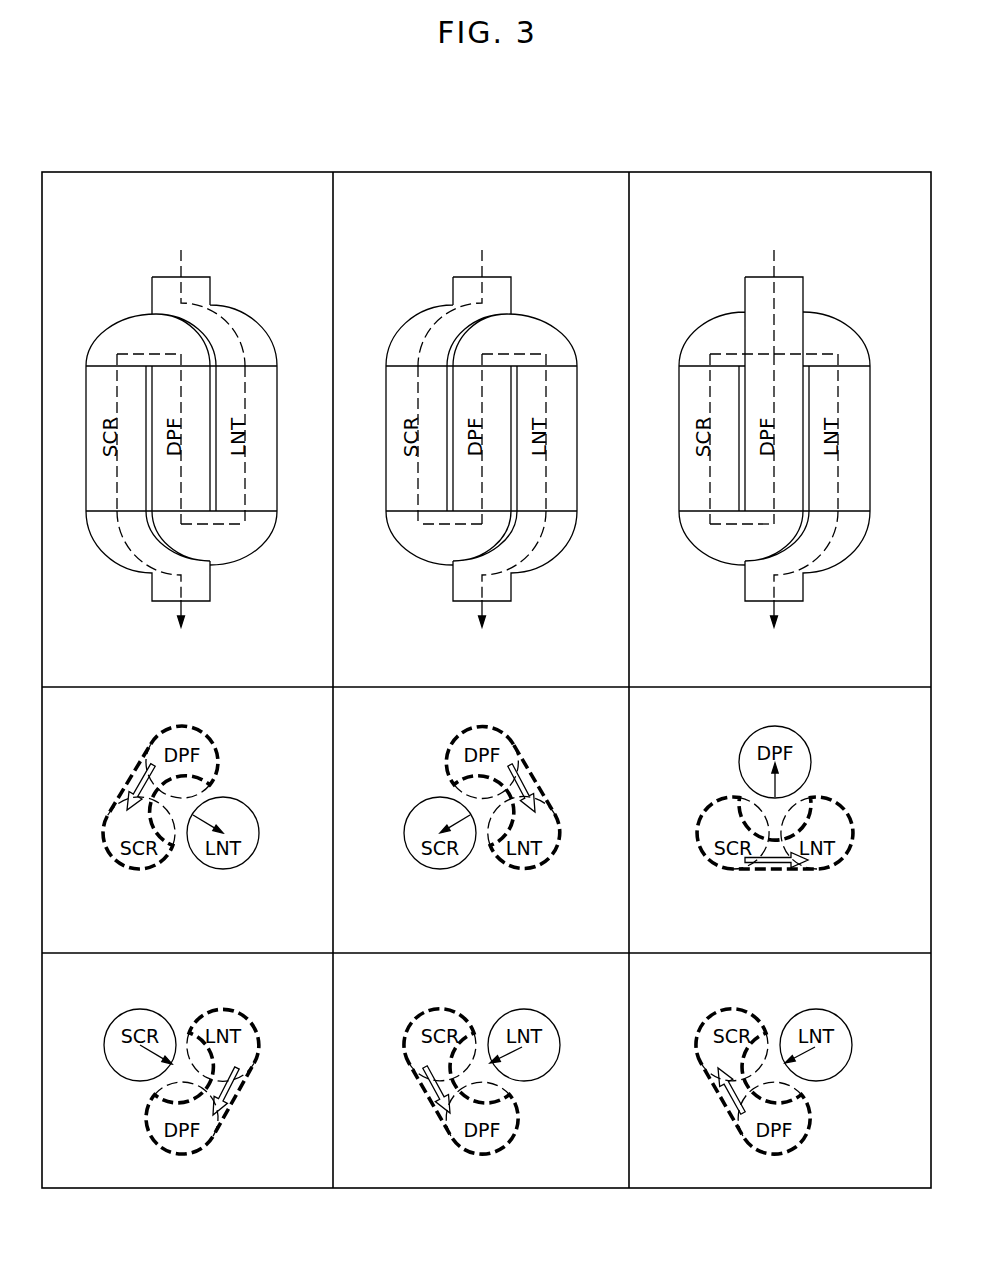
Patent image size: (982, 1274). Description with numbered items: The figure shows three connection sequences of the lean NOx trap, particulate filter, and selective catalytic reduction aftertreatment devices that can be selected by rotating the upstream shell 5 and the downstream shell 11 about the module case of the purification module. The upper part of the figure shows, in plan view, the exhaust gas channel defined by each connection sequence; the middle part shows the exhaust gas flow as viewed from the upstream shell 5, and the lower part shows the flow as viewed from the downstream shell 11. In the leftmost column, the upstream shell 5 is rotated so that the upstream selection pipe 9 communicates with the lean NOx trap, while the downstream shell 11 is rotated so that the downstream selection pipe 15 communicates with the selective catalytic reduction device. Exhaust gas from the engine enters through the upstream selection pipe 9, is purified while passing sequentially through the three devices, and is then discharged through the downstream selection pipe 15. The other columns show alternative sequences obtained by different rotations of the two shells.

The upstream shell 5 is at (119, 314).
The upstream selection pipe 9 is at (243, 313).
The downstream shell 11 is at (240, 563).
The downstream selection pipe 15 is at (120, 563).